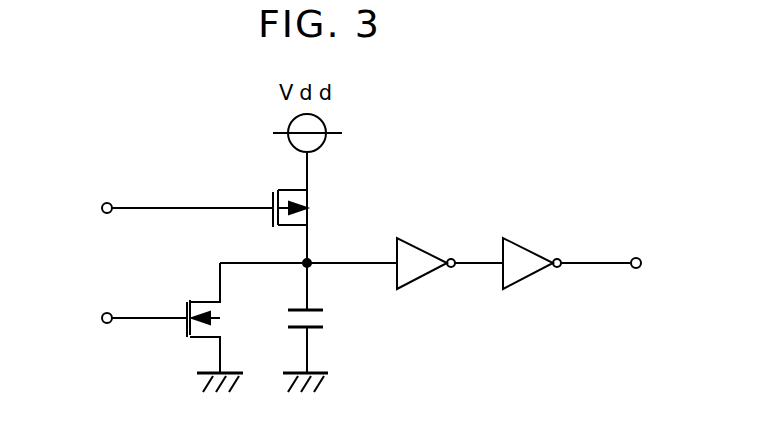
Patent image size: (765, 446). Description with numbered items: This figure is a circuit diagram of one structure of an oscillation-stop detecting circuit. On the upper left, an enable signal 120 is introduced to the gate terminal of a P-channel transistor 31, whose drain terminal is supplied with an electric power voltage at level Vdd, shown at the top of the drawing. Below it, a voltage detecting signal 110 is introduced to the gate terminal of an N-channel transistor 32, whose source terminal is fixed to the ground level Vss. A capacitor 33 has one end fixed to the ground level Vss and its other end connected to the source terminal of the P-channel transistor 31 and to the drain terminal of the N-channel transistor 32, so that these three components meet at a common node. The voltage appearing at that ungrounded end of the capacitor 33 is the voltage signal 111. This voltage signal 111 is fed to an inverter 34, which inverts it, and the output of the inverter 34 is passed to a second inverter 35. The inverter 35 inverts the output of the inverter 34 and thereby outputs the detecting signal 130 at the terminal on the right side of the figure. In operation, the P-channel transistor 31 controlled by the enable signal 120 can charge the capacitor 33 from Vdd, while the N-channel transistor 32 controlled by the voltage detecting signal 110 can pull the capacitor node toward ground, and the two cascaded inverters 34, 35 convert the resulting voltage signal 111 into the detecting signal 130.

The enable signal 120 is at (137, 207).
The voltage detecting signal 110 is at (145, 315).
The detecting signal 130 is at (603, 262).
The P-channel transistor 31 is at (278, 190).
The N-channel transistor 32 is at (198, 340).
The capacitor 33 is at (322, 319).
The inverter 34 is at (418, 243).
The inverter 35 is at (520, 243).
The voltage signal 111 is at (357, 262).